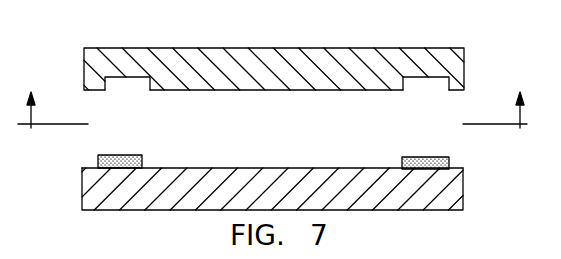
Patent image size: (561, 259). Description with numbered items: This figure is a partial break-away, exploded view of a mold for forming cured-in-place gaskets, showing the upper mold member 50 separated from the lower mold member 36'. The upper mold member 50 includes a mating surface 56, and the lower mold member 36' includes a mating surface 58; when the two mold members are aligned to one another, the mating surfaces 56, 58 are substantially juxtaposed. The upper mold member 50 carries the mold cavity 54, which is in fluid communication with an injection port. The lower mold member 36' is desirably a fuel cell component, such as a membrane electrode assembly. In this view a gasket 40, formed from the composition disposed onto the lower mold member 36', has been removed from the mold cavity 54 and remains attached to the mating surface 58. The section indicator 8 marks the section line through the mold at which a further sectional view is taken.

The upper mold member 50 is at (84, 61).
The mold cavity 54 is at (129, 79).
The mating surface 56 is at (277, 91).
The mating surface 58 is at (262, 168).
The gasket 40 is at (142, 159).
The lower mold member 36' is at (302, 195).
The section line 8- 8 is at (274, 124).